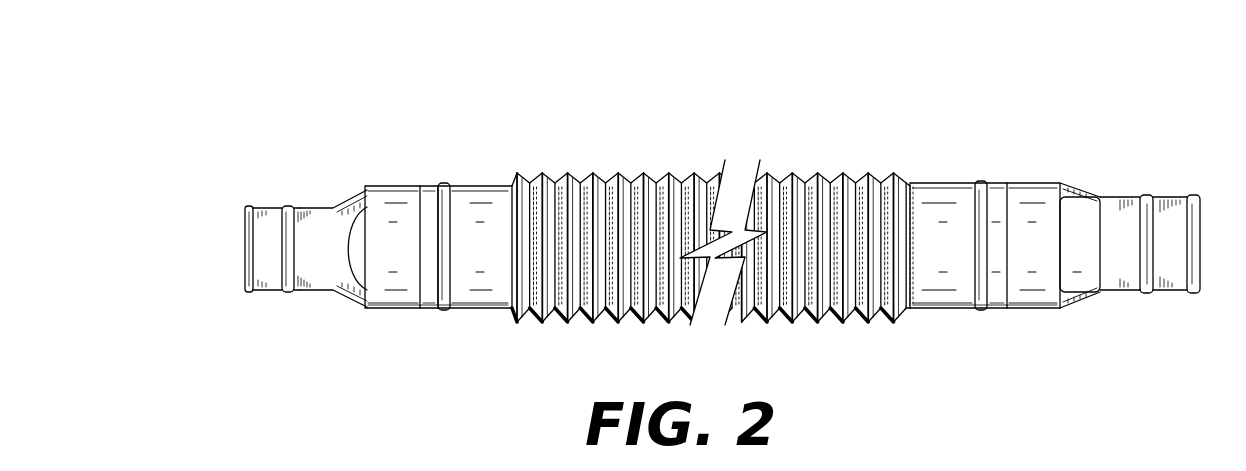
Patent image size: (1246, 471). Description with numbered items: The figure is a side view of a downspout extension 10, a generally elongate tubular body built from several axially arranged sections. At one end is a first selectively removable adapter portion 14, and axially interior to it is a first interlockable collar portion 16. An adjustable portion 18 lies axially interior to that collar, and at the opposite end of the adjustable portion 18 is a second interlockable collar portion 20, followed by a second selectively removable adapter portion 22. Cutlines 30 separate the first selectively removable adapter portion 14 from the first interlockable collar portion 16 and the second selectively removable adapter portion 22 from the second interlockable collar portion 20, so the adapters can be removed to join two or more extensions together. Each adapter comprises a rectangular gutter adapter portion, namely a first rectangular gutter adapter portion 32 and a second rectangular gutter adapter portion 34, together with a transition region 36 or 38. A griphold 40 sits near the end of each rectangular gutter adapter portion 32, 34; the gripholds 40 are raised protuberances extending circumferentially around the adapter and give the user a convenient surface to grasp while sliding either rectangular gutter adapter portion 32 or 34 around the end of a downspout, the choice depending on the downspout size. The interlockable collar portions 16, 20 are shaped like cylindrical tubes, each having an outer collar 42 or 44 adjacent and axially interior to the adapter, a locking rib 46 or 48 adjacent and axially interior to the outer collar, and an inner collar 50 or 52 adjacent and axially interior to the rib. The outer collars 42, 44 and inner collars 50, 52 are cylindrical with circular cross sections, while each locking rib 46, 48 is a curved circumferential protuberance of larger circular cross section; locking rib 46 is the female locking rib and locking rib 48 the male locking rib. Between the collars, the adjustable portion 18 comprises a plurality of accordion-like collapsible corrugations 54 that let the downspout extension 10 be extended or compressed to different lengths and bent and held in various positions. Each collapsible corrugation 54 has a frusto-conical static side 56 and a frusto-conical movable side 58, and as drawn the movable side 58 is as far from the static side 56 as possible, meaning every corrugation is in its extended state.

The downspout extension 10 is at (718, 55).
The first selectively removable adapter portion 14 is at (1010, 152).
The first interlockable collar portion 16 is at (1005, 153).
The adjustable portion 18 is at (513, 153).
The second interlockable collar portion 20 is at (512, 162).
The second selectively removable adapter portion 22 is at (420, 162).
The cutlines 30 is at (421, 278).
The first rectangular gutter adapter portion 32 is at (1103, 325).
The second rectangular gutter adapter portion 34 is at (245, 322).
The transition region 36 is at (1005, 328).
The transition region 38 is at (423, 322).
The griphold 40 is at (286, 207).
The outer collar 42 is at (1004, 291).
The outer collar 44 is at (436, 283).
The female locking rib 46 is at (981, 306).
The male locking rib 48 is at (447, 308).
The inner collar 50 is at (952, 291).
The inner collar 52 is at (488, 282).
The collapsible corrugations 54 is at (818, 317).
The static side 56 is at (628, 303).
The movable side 58 is at (613, 303).